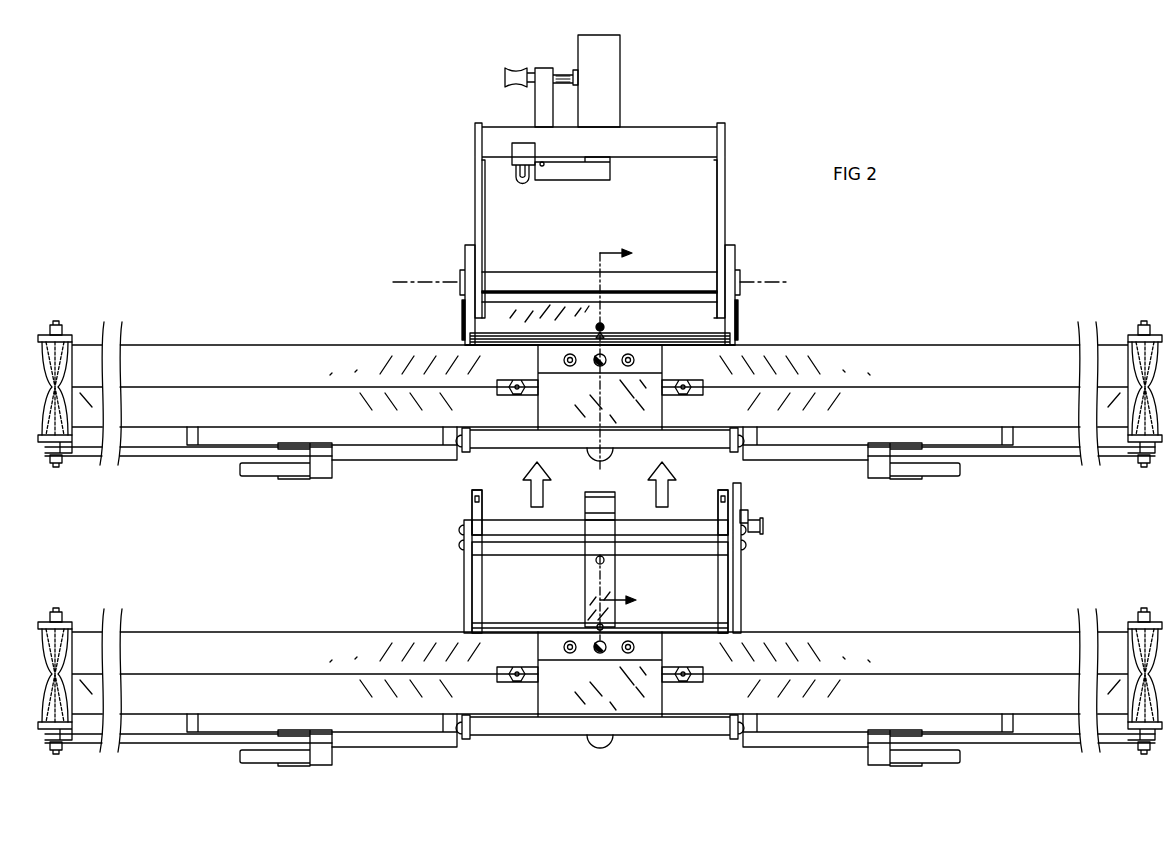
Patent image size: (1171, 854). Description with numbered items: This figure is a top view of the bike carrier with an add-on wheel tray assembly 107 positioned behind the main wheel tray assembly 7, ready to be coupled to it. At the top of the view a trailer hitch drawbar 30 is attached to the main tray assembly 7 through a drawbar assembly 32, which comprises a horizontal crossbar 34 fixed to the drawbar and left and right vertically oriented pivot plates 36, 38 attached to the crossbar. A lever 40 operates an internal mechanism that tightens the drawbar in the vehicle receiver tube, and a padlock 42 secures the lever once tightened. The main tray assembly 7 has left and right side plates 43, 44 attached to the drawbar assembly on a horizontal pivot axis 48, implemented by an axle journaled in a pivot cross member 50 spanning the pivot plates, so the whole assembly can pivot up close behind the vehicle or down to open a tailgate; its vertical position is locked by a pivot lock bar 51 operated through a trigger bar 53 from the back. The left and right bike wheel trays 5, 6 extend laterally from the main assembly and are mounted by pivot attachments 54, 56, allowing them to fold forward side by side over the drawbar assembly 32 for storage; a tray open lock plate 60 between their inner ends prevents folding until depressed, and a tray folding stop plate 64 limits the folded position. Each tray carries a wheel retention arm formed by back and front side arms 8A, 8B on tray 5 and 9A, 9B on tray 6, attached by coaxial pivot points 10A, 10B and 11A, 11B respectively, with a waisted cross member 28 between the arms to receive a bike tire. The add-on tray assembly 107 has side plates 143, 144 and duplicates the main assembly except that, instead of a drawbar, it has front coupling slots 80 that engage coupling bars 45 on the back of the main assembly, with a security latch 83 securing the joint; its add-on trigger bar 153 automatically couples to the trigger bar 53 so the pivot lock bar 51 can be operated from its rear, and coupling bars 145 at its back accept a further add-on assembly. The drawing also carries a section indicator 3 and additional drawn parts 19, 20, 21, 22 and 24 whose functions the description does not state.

The section line 3- 3 is at (631, 443).
The bike wheel tray 5 is at (236, 352).
The bike wheel tray 6 is at (963, 352).
The main wheel tray assembly 7 is at (422, 316).
The back side arm 8A is at (72, 444).
The front side arm 8B is at (72, 336).
The back side arm 9A is at (1128, 444).
The front side arm 9B is at (1128, 336).
The coaxial pivot point 10A is at (53, 468).
The coaxial pivot point 10B is at (54, 320).
The coaxial pivot point 11A is at (1147, 468).
The coaxial pivot point 11B is at (1146, 318).
The support bracket 19 is at (380, 450).
The clamp block 20 is at (318, 479).
The clamp block 21 is at (882, 479).
The left plate 22 is at (160, 457).
The right plate 24 is at (1042, 457).
The cross member 28 is at (70, 358).
The trailer hitch drawbar 30 is at (622, 67).
The drawbar assembly 32 is at (605, 190).
The horizontal crossbar 34 is at (652, 130).
The left pivot plate 36 is at (485, 223).
The right pivot plate 38 is at (715, 220).
The lever 40 is at (560, 180).
The padlock 42 is at (515, 143).
The left side plate 43 is at (465, 262).
The right side plate 44 is at (735, 262).
The coupling bar 45 is at (690, 448).
The horizontal pivot axis 48 is at (792, 282).
The pivot cross member 50 is at (549, 270).
The pivot lock bar 51 is at (707, 325).
The trigger bar 53 is at (612, 456).
The pivot attachment 54 is at (518, 380).
The pivot attachment 56 is at (682, 380).
The tray open lock plate 60 is at (583, 378).
The tray folding stop plate 64 is at (626, 340).
The front coupling slot 80 is at (472, 506).
The security latch 83 is at (746, 506).
The add-on wheel tray assembly 107 is at (568, 613).
The side plate 143 is at (467, 586).
The side plate 144 is at (734, 588).
The coupling bar 145 is at (678, 733).
The add-on trigger bar 153 is at (585, 492).